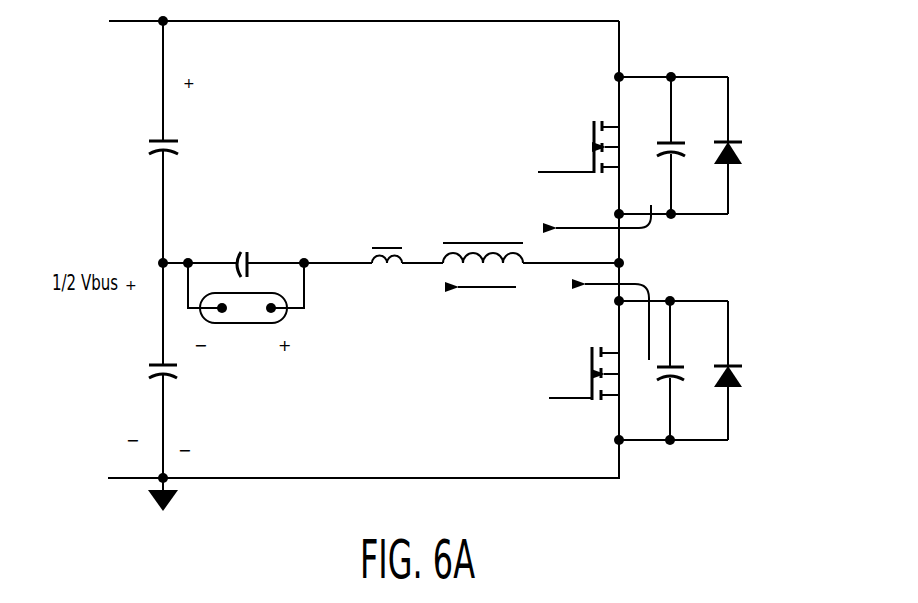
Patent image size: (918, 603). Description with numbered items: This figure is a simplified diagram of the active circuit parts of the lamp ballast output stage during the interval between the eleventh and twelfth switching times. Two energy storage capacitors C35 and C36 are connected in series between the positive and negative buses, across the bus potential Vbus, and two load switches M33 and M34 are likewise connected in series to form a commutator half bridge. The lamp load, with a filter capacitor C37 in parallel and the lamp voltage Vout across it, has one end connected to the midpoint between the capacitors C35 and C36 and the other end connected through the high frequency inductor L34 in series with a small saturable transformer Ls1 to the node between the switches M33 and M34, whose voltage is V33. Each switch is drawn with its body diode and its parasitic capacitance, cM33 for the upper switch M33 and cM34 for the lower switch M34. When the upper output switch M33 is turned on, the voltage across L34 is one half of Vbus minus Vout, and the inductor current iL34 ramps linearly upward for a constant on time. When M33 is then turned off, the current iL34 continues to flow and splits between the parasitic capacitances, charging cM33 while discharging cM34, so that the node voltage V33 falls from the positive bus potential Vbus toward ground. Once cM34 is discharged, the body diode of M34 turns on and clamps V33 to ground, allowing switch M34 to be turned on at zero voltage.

The positive bus potential Vbus is at (198, 49).
The energy storage capacitor C35 is at (178, 132).
The energy storage capacitor C36 is at (176, 385).
The filter capacitor C37 is at (240, 246).
The lamp output voltage Vout is at (246, 311).
The small saturable transformer Ls1 is at (387, 242).
The high frequency inductor L34 is at (483, 238).
The inductor current iL34 is at (487, 306).
The upper output switch M33 is at (577, 147).
The lower output switch M34 is at (577, 373).
The parasitic capacitance of switch M33 cM33 is at (683, 143).
The parasitic capacitance of switch M34 cM34 is at (681, 367).
The node voltage V33 is at (618, 282).